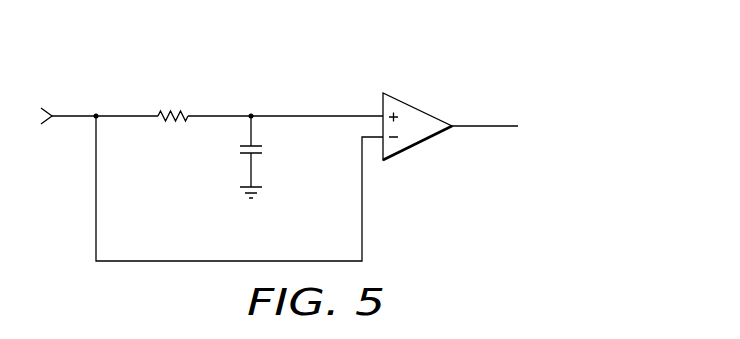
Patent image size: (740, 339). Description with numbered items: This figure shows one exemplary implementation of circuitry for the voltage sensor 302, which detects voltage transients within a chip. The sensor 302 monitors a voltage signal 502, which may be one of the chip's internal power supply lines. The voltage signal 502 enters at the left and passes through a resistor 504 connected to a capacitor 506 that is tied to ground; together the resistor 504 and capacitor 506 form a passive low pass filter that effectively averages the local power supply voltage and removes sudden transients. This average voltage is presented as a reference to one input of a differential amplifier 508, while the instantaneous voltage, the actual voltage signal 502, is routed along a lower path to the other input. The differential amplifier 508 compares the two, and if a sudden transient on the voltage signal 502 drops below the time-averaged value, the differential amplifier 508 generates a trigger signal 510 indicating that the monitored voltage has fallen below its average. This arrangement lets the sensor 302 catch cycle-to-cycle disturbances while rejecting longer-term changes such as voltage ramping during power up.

The voltage sensor 302 is at (432, 78).
The voltage signal 502 is at (75, 116).
The resistor 504 is at (177, 108).
The capacitor 506 is at (263, 148).
The differential amplifier 508 is at (417, 143).
The trigger signal 510 is at (492, 125).